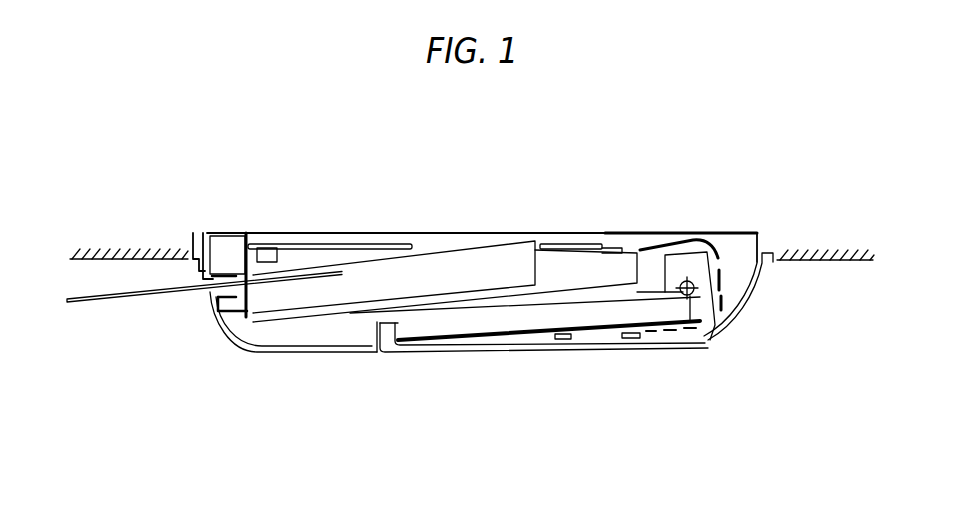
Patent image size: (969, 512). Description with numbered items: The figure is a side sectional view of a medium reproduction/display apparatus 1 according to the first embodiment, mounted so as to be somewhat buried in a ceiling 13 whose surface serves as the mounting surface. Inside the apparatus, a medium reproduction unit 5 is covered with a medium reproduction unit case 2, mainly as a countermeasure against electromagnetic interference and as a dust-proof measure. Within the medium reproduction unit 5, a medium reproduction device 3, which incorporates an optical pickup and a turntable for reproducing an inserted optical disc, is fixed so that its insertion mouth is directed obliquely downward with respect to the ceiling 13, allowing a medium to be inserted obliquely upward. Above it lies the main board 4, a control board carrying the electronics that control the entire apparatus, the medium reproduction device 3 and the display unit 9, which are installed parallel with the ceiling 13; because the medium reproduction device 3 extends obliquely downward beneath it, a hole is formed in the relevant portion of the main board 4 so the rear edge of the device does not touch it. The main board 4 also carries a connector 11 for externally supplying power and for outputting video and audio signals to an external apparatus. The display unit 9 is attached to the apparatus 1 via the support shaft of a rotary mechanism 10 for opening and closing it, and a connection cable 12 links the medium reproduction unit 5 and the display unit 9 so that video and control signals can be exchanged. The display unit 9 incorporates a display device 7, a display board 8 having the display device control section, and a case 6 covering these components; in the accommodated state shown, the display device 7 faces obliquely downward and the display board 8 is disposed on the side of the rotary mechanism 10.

The medium reproduction/display apparatus 1 is at (468, 233).
The medium reproduction unit case 2 is at (338, 317).
The medium reproduction device 3 is at (293, 297).
The main board 4 is at (385, 248).
The medium reproduction unit 5 is at (571, 263).
The case 6 is at (403, 353).
The display device 7 is at (437, 335).
The display board 8 is at (565, 339).
The display unit 9 is at (628, 338).
The rotary mechanism 10 is at (700, 343).
The connector 11 is at (268, 247).
The connection cable 12 is at (650, 248).
The ceiling 13 is at (110, 260).